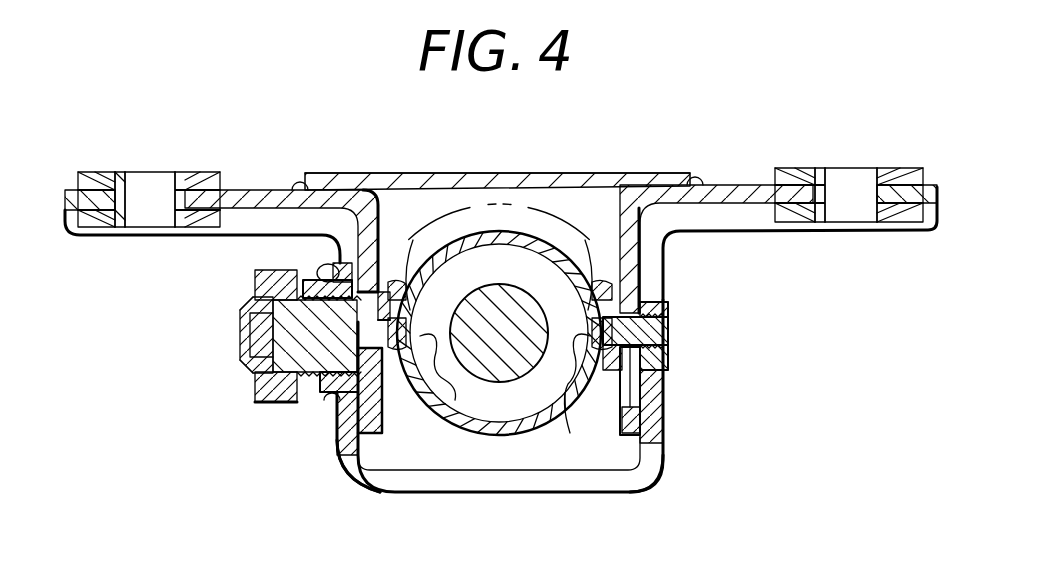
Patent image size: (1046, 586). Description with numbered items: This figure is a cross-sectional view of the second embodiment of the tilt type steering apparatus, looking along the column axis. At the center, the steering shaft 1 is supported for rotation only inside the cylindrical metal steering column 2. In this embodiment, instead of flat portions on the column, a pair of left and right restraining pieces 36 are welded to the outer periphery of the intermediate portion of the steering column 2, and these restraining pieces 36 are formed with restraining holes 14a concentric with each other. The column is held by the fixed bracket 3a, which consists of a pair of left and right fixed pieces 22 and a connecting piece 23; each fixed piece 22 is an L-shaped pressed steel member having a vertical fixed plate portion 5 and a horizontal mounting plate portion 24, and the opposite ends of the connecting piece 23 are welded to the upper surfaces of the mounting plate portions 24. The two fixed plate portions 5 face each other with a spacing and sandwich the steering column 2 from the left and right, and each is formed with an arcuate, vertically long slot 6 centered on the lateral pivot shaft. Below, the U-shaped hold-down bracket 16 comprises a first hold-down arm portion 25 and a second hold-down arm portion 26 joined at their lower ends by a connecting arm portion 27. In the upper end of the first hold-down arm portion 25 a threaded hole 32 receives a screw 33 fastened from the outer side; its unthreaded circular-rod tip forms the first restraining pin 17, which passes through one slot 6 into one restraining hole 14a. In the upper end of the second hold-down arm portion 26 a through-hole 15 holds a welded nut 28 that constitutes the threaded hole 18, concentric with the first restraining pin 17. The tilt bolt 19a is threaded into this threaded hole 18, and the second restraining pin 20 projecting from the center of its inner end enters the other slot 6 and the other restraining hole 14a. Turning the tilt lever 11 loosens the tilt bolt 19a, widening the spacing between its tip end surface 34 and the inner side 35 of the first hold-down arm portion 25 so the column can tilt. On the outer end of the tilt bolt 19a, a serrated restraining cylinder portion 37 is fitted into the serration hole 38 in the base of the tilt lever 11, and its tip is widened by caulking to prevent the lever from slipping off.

The steering shaft 1 is at (520, 302).
The steering column 2 is at (532, 232).
The fixed bracket 3a is at (655, 172).
The fixed plate portion 5 is at (337, 200).
The slot 6 is at (345, 462).
The tilt lever 11 is at (258, 392).
The restraining hole 14a is at (440, 372).
The through-hole 15 is at (318, 275).
The hold-down bracket 16 is at (548, 494).
The first restraining pin 17 is at (656, 306).
The threaded hole 18 is at (384, 390).
The tilt bolt 19a is at (283, 403).
The second restraining pin 20 is at (382, 276).
The fixed piece 22 is at (263, 190).
The connecting piece 23 is at (502, 176).
The mounting plate portion 24 is at (233, 190).
The first hold-down arm portion 25 is at (652, 400).
The second hold-down arm portion 26 is at (336, 422).
The connecting arm portion 27 is at (506, 495).
The nut 28 is at (315, 394).
The threaded hole 32 is at (666, 350).
The screw 33 is at (668, 333).
The tip end surface 34 is at (248, 334).
The inner side 35 is at (636, 398).
The restraining piece 36 is at (590, 280).
The restraining cylinder portion 37 is at (240, 305).
The serration hole 38 is at (248, 360).